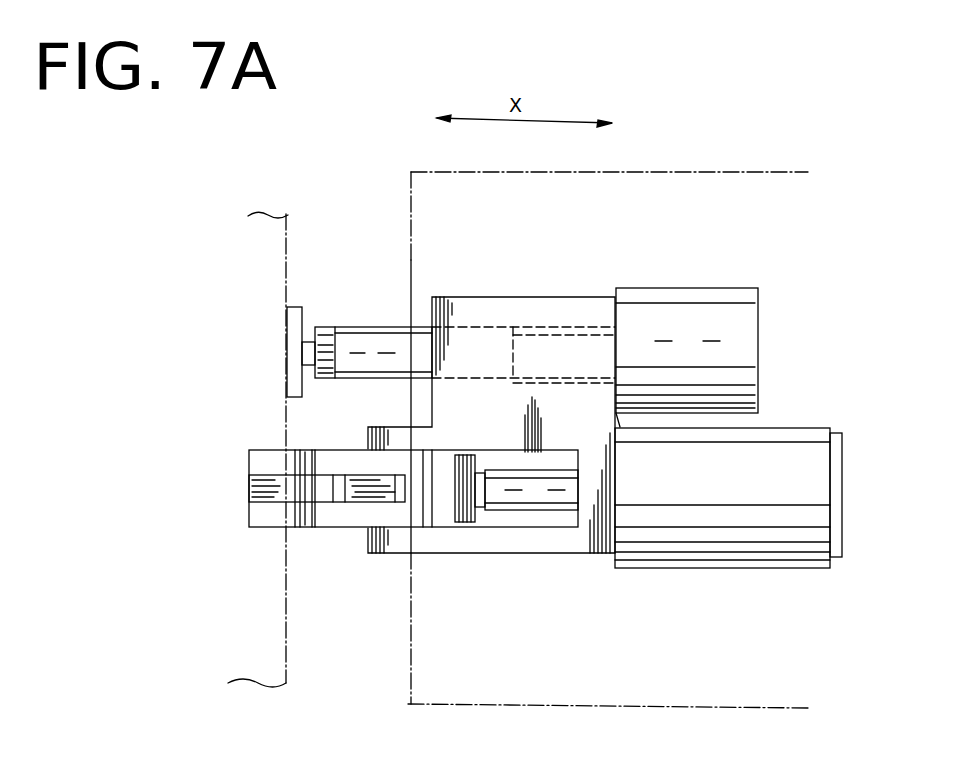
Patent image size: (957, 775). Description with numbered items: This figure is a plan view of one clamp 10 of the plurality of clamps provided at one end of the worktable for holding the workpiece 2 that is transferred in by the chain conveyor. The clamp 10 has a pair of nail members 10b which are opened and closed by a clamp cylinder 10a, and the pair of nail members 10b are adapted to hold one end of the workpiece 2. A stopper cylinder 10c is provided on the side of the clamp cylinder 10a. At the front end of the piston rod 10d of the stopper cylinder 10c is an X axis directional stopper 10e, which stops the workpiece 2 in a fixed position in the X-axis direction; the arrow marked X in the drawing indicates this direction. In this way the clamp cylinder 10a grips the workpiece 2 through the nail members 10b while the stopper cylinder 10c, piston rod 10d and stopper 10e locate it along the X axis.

The workpiece 2 is at (275, 642).
The clamp 10 is at (422, 561).
The clamp cylinder 10a is at (737, 557).
The nail members 10b is at (323, 518).
The stopper cylinder 10c is at (712, 298).
The piston rod 10d is at (358, 327).
The X axis directional stopper 10e is at (288, 357).